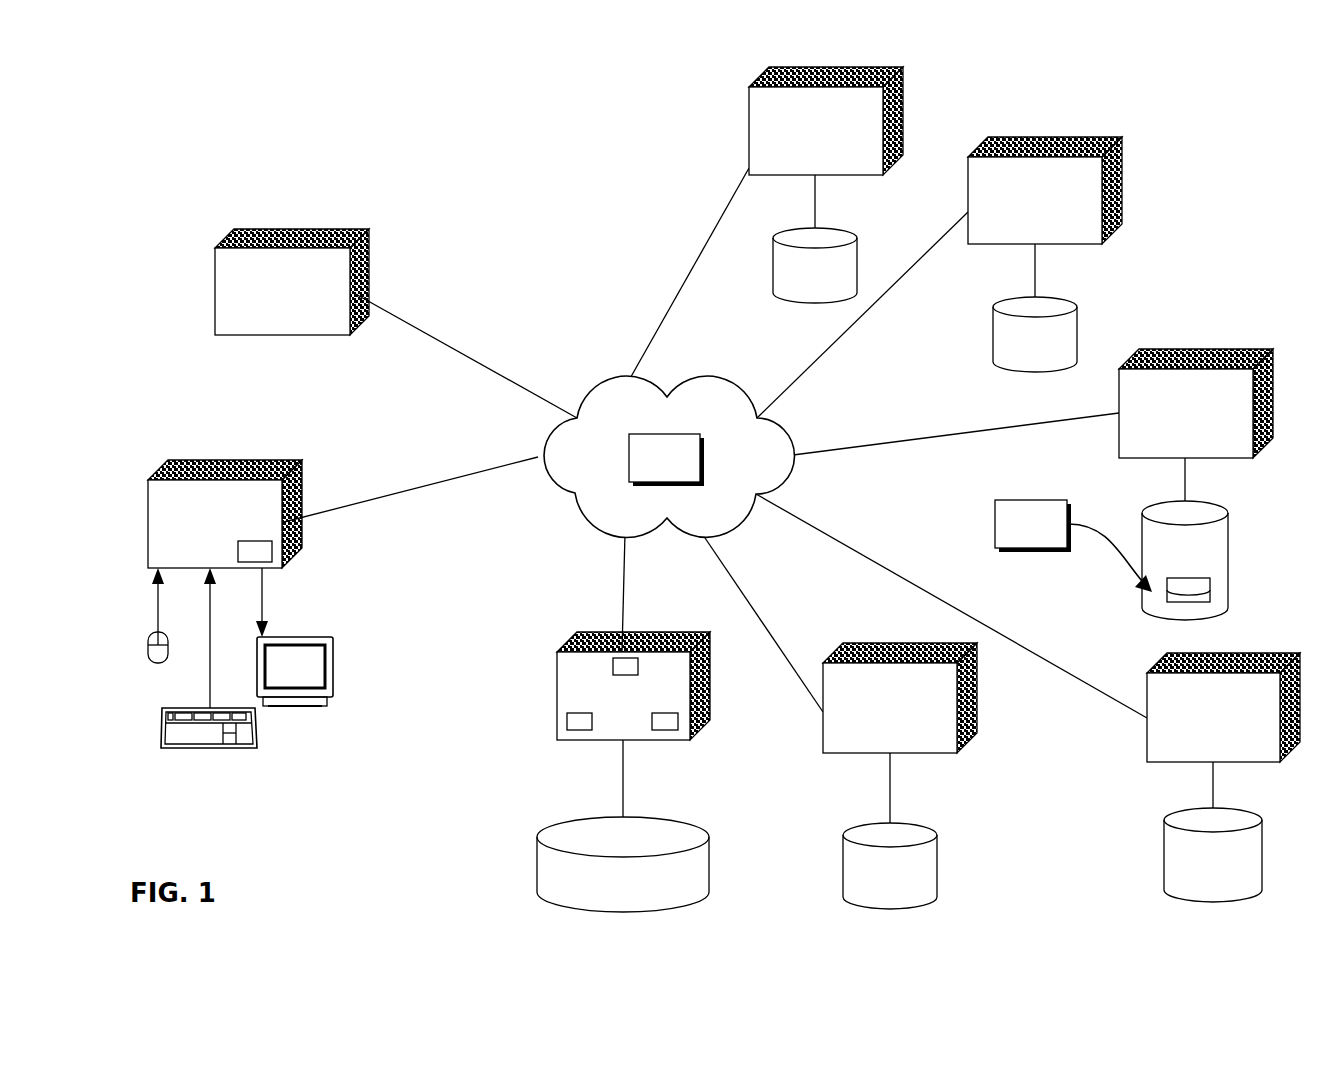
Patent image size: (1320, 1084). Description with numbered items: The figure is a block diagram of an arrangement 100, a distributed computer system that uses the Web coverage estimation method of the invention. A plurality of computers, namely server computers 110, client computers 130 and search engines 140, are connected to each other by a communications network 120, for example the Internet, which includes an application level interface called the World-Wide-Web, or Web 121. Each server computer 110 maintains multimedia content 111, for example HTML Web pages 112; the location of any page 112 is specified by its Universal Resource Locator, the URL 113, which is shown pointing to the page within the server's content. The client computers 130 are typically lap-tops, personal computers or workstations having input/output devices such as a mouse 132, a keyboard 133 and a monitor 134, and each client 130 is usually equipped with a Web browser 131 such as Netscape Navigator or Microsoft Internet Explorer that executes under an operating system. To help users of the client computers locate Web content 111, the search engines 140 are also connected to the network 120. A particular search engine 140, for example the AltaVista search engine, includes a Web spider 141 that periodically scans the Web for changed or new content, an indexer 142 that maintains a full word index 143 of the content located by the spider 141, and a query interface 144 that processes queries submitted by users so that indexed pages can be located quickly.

The arrangement 100 is at (430, 808).
The server computer 110 is at (820, 80).
The multimedia content 111 is at (1230, 577).
The HTML Web page 112 is at (1185, 605).
The URL 113 is at (1035, 503).
The communications network 120 is at (598, 392).
The Web 121 is at (629, 458).
The client computer 130 is at (284, 247).
The Web browser 131 is at (283, 553).
The mouse 132 is at (150, 635).
The keyboard 133 is at (185, 748).
The monitor 134 is at (296, 708).
The search engine 140 is at (648, 642).
The Web spider 141 is at (578, 733).
The indexer 142 is at (663, 733).
The full word index 143 is at (685, 903).
The query interface 144 is at (612, 667).